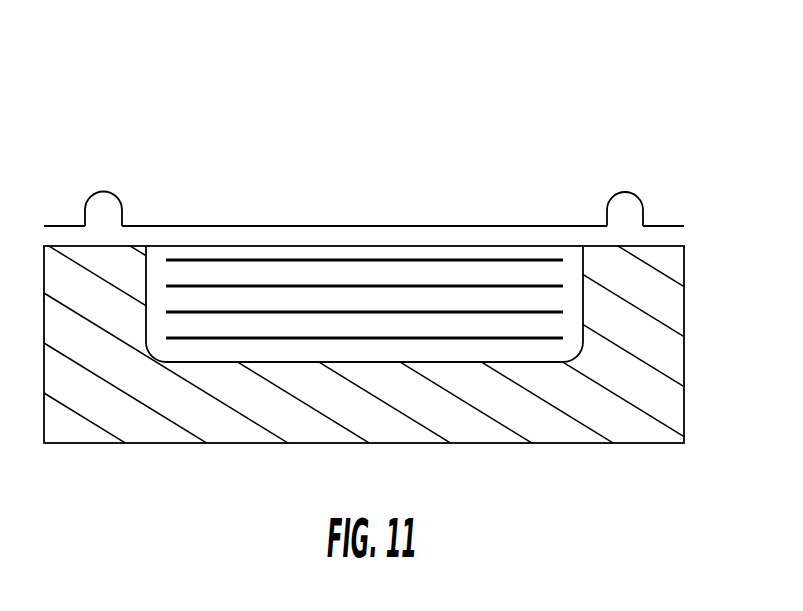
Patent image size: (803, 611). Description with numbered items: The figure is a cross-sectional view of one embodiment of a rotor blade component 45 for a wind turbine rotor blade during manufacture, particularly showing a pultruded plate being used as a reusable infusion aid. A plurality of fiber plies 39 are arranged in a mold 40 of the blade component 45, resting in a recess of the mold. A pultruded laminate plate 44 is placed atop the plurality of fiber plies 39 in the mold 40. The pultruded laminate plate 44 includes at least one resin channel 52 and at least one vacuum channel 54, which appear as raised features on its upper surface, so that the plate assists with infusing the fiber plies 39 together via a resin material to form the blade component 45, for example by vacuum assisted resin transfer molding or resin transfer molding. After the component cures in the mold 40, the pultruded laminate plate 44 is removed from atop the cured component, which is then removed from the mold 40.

The rotor blade component 45 is at (124, 104).
The mold 40 is at (658, 246).
The fiber plies 39 is at (445, 285).
The pultruded laminate plate 44 is at (466, 220).
The resin channel 52 is at (104, 192).
The vacuum channel 54 is at (625, 192).